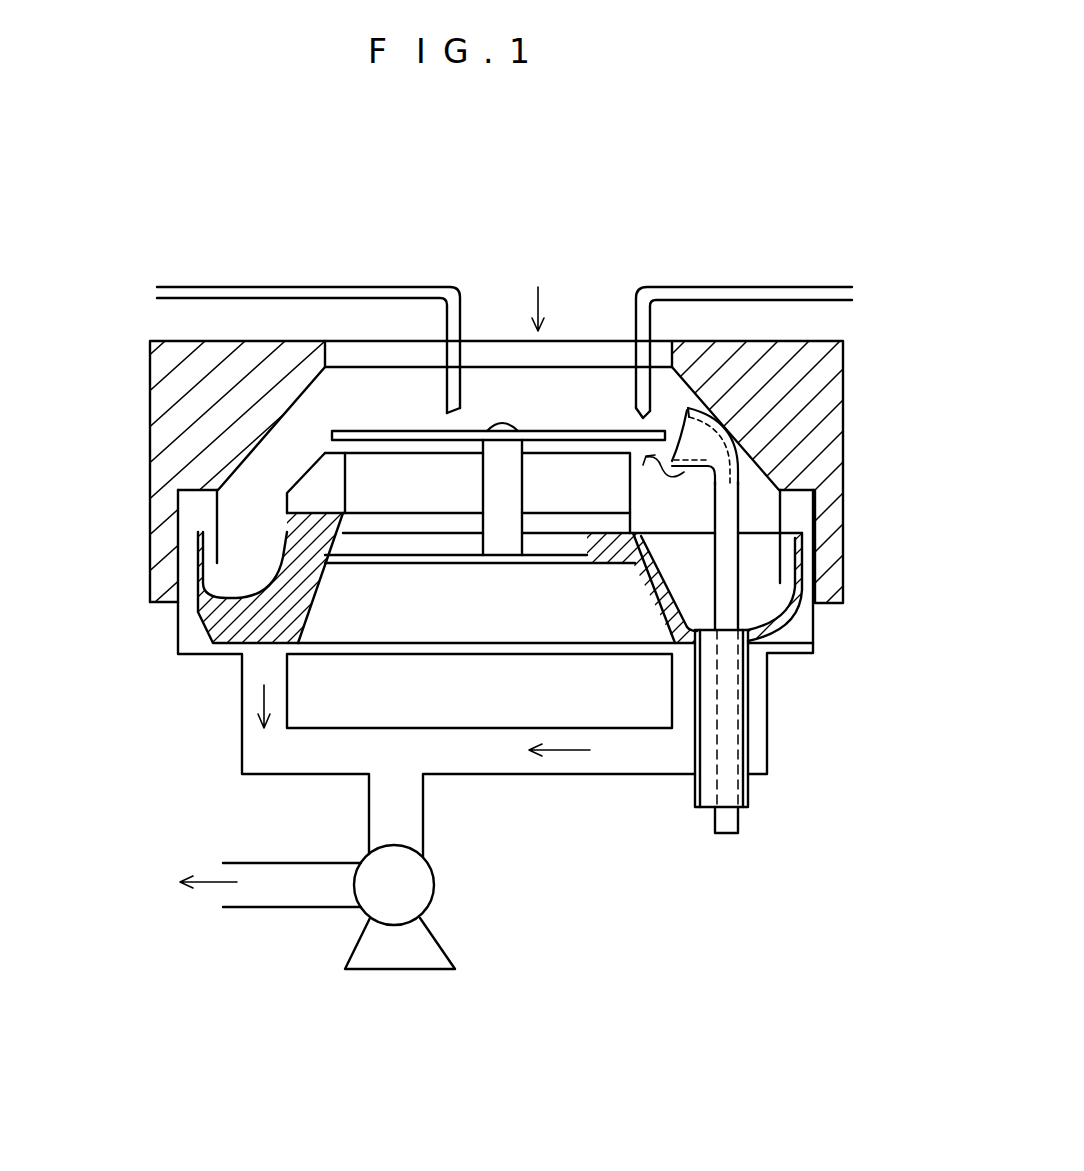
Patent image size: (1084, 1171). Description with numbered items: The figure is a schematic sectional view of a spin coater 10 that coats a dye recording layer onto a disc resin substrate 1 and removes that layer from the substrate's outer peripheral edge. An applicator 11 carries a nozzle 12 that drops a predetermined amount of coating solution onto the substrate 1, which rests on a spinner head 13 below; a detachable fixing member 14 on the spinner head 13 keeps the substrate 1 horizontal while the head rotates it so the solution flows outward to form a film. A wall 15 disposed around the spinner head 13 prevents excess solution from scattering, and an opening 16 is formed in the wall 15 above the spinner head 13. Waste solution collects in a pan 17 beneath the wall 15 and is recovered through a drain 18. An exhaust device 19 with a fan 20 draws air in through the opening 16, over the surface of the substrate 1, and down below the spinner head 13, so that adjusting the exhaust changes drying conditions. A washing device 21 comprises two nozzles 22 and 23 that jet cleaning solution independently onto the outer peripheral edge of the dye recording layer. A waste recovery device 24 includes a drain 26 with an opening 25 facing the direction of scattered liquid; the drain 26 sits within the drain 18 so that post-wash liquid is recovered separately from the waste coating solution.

The disc resin substrate 1 is at (587, 427).
The spin coater 10 is at (750, 247).
The applicator 11 is at (262, 283).
The nozzle 12 is at (342, 293).
The spinner head 13 is at (505, 543).
The fixing member 14 is at (490, 425).
The wall 15 is at (172, 440).
The opening 16 is at (510, 340).
The pan 17 is at (232, 587).
The drain 18 is at (700, 788).
The exhaust device 19 is at (338, 927).
The fan 20 is at (420, 888).
The washing device 21 is at (807, 283).
The nozzle 22 is at (627, 390).
The nozzle 23 is at (695, 437).
The waste recovery device 24 is at (748, 513).
The opening 25 is at (713, 418).
The drain 26 is at (735, 823).